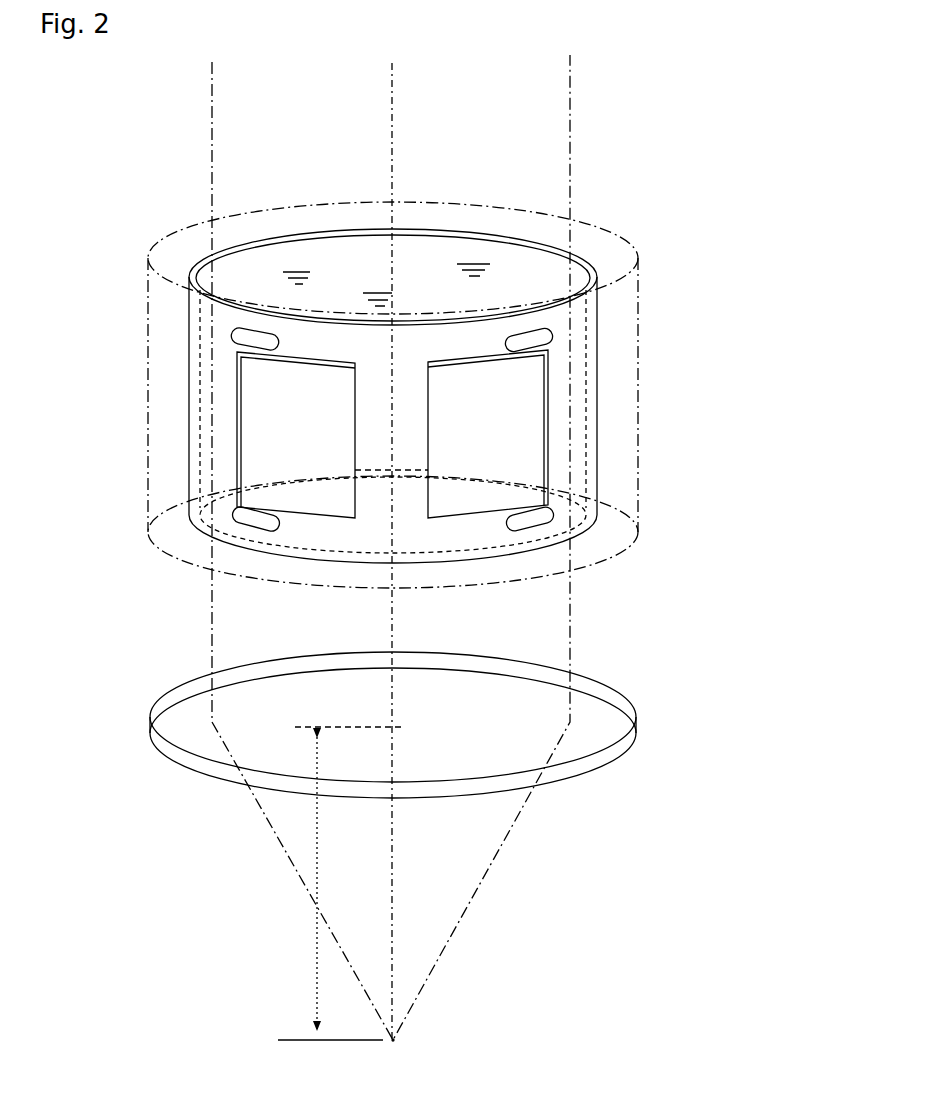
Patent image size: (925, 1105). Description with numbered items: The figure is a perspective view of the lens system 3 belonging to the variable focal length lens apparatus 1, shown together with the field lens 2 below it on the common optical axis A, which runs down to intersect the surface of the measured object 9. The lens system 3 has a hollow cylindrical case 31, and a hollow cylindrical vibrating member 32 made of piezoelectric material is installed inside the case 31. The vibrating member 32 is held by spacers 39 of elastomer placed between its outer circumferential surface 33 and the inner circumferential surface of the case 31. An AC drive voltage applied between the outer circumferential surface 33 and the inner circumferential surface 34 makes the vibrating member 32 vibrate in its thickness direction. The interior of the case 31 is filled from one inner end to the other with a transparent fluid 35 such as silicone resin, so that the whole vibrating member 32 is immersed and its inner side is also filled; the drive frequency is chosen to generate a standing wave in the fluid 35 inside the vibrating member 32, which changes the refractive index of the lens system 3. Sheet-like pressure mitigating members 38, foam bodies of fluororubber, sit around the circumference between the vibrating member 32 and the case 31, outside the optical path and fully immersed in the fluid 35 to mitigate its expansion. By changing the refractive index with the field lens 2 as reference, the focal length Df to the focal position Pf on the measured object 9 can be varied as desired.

The variable focal length lens apparatus 1 is at (742, 128).
The field lens 2 is at (142, 712).
The lens system 3 is at (140, 250).
The measured object 9 is at (290, 1040).
The case 31 is at (150, 350).
The vibrating member 32 is at (188, 407).
The outer circumferential surface 33 is at (592, 272).
The inner circumferential surface 34 is at (530, 282).
The transparent fluid 35 is at (470, 262).
The pressure mitigating members 38 is at (477, 507).
The spacers 39 is at (232, 515).
The optical axis A is at (386, 118).
The focal length Df is at (350, 878).
The focal position Pf is at (393, 1040).